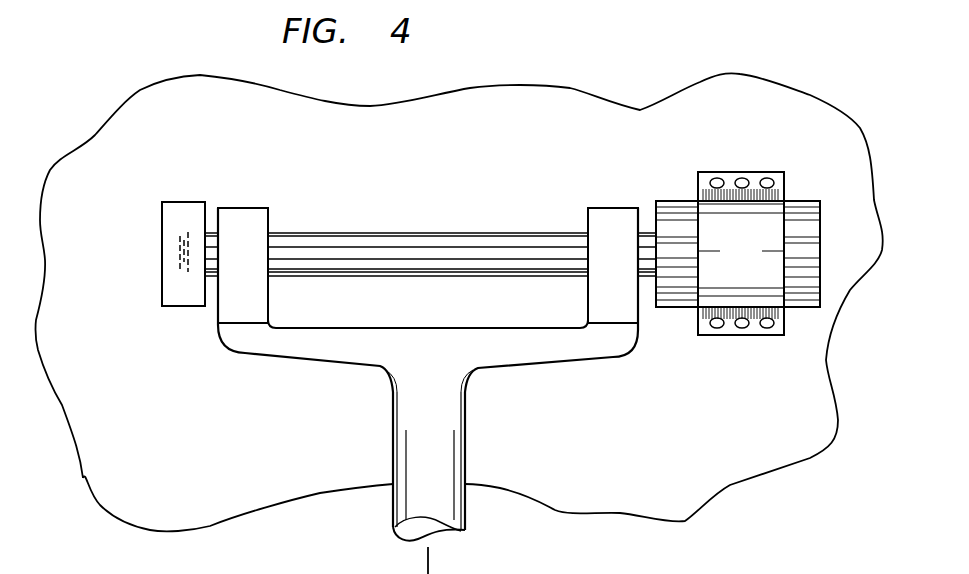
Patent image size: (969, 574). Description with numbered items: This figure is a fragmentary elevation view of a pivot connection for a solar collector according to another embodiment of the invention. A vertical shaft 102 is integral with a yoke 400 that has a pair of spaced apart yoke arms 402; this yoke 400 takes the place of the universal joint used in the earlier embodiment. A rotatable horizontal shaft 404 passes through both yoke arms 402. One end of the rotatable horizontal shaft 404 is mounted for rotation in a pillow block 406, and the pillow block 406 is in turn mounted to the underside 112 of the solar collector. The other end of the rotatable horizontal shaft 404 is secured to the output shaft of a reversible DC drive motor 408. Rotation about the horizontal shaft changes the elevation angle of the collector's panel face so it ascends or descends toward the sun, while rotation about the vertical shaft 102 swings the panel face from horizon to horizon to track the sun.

The underside 112 is at (459, 140).
The yoke 400 is at (400, 326).
The yoke arms 402 is at (243, 208).
The rotatable horizontal shaft 404 is at (405, 234).
The pillow block 406 is at (165, 252).
The reversible DC drive motor 408 is at (680, 201).
The vertical shaft 102 is at (400, 455).